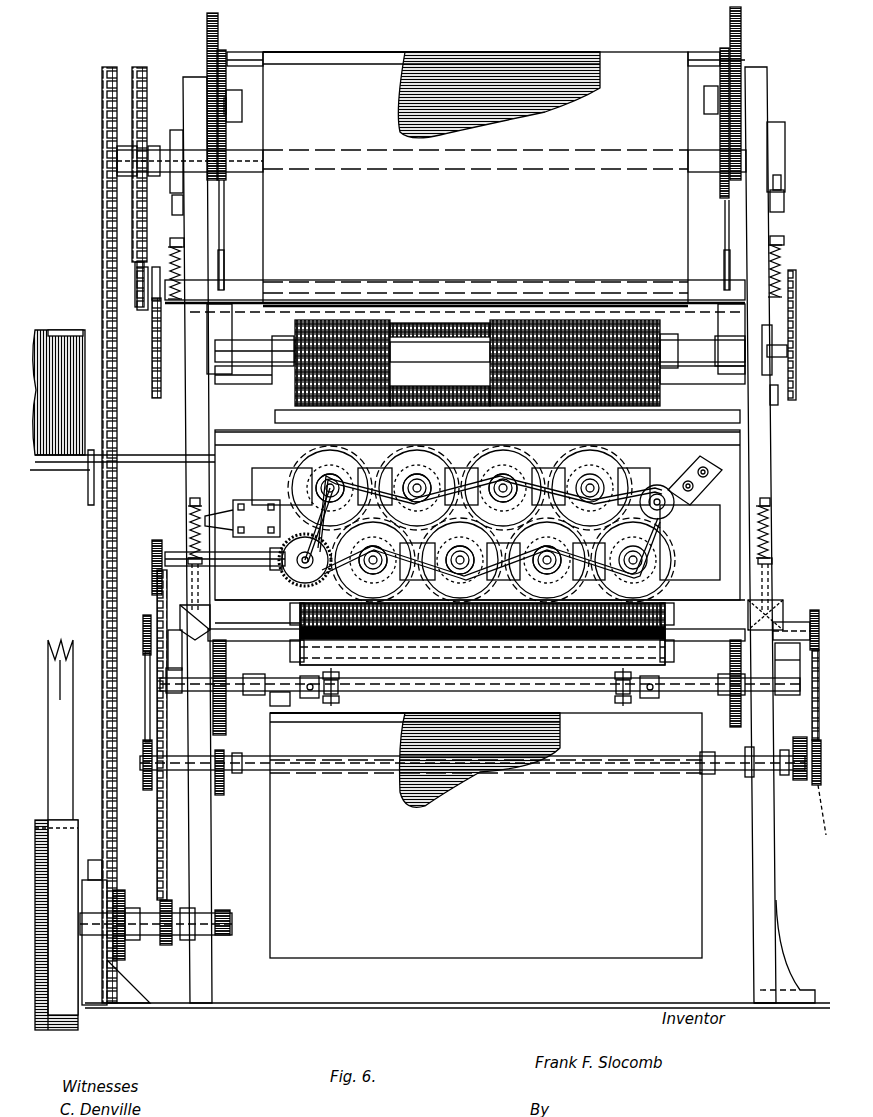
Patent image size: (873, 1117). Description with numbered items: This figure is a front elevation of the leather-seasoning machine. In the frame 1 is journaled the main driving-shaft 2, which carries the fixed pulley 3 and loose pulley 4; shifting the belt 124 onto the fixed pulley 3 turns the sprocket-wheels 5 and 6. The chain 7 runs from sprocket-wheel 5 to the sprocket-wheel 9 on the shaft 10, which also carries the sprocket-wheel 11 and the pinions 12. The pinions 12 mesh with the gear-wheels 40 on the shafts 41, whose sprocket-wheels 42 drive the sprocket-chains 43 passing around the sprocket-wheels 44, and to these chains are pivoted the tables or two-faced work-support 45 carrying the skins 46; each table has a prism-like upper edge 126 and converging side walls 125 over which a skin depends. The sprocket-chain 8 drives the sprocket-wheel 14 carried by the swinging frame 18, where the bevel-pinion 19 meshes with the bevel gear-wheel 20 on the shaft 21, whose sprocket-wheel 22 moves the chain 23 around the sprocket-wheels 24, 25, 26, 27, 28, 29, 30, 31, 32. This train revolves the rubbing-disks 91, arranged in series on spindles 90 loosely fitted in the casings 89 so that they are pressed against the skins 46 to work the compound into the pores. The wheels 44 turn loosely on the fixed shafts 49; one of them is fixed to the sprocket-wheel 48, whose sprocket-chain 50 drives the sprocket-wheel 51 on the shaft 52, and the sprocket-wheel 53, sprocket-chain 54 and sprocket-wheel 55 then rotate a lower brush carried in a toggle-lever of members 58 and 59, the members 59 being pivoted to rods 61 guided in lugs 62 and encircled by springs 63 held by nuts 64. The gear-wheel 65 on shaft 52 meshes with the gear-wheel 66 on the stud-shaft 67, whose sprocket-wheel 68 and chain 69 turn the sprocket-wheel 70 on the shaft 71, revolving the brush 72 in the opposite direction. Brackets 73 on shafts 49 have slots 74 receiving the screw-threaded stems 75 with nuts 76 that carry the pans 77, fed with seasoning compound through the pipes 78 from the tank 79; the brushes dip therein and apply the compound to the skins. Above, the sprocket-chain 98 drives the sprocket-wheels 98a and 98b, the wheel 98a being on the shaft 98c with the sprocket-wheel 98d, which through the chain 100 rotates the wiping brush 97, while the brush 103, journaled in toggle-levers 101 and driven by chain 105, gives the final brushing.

The frame 1 is at (203, 830).
The main driving-shaft 2 is at (230, 922).
The fixed pulley 3 is at (56, 925).
The loose pulley 4 is at (42, 826).
The sprocket-wheel 5 is at (125, 950).
The sprocket-wheel 6 is at (167, 947).
The chain 7 is at (110, 863).
The sprocket-chain 8 is at (167, 835).
The sprocket-wheel 9 is at (101, 217).
The shaft 10 is at (162, 148).
The sprocket-wheel 11 is at (147, 90).
The pinions 12 is at (477, 172).
The sprocket-wheel 14 is at (155, 540).
The swinging frame 18 is at (718, 568).
The bevel-pinion 19 is at (265, 566).
The bevel gear-wheel 20 is at (295, 583).
The shaft 21 is at (305, 585).
The sprocket-wheel 22 is at (305, 585).
The chain 23 is at (372, 470).
The sprocket-wheel 24 is at (373, 560).
The sprocket-wheel 25 is at (460, 560).
The sprocket-wheel 26 is at (547, 560).
The sprocket-wheel 27 is at (633, 560).
The sprocket-wheel 28 is at (330, 488).
The sprocket-wheel 29 is at (417, 488).
The sprocket-wheel 30 is at (503, 488).
The sprocket-wheel 31 is at (590, 488).
The sprocket-wheel 32 is at (657, 495).
The gear-wheels 40 is at (207, 40).
The shafts 41 is at (183, 100).
The sprocket-wheels 42 is at (226, 180).
The sprocket-chains 43 is at (224, 245).
The sprocket-wheels 44 is at (224, 55).
The work-support 45 is at (482, 505).
The skins 46 is at (499, 429).
The sprocket-wheel 48 is at (220, 740).
The fixed shafts 49 is at (480, 680).
The sprocket-chain 50 is at (282, 720).
The sprocket-wheel 51 is at (224, 780).
The shaft 52 is at (180, 775).
The sprocket-wheel 53 is at (145, 790).
The sprocket-chain 54 is at (145, 705).
The sprocket-wheel 55 is at (143, 640).
The toggle-lever member 58 is at (166, 670).
The toggle-lever member 59 is at (212, 612).
The rods 61 is at (192, 593).
The lugs 62 is at (188, 575).
The springs 63 is at (190, 530).
The nuts 64 is at (192, 500).
The gear-wheel 65 is at (795, 740).
The gear-wheel 66 is at (800, 782).
The stud-shaft 67 is at (738, 805).
The sprocket-wheel 68 is at (818, 785).
The chain 69 is at (817, 819).
The sprocket-wheel 70 is at (800, 618).
The shaft 71 is at (476, 644).
The brush 72 is at (435, 658).
The brackets 73 is at (312, 698).
The slots 74 is at (338, 688).
The screw-threaded stems 75 is at (333, 700).
The nuts 76 is at (340, 675).
The pans 77 is at (505, 660).
The pipes 78 is at (88, 495).
The tank 79 is at (122, 389).
The tubes or casings 89 is at (438, 524).
The spindles 90 is at (416, 524).
The rubbing-disks 91 is at (300, 488).
The brush 97 is at (437, 342).
The sprocket-chain 98 is at (169, 262).
The sprocket-wheel 98a is at (152, 285).
The sprocket-wheel 98b is at (137, 280).
The shaft 98c is at (244, 305).
The sprocket-wheel 98d is at (790, 275).
The sprocket-chain 100 is at (796, 350).
The toggle-levers 101 is at (774, 385).
The brush 103 is at (600, 330).
The chain 105 is at (152, 340).
The belt 124 is at (57, 719).
The converging side walls 125 is at (368, 66).
The upper edge 126 is at (343, 52).